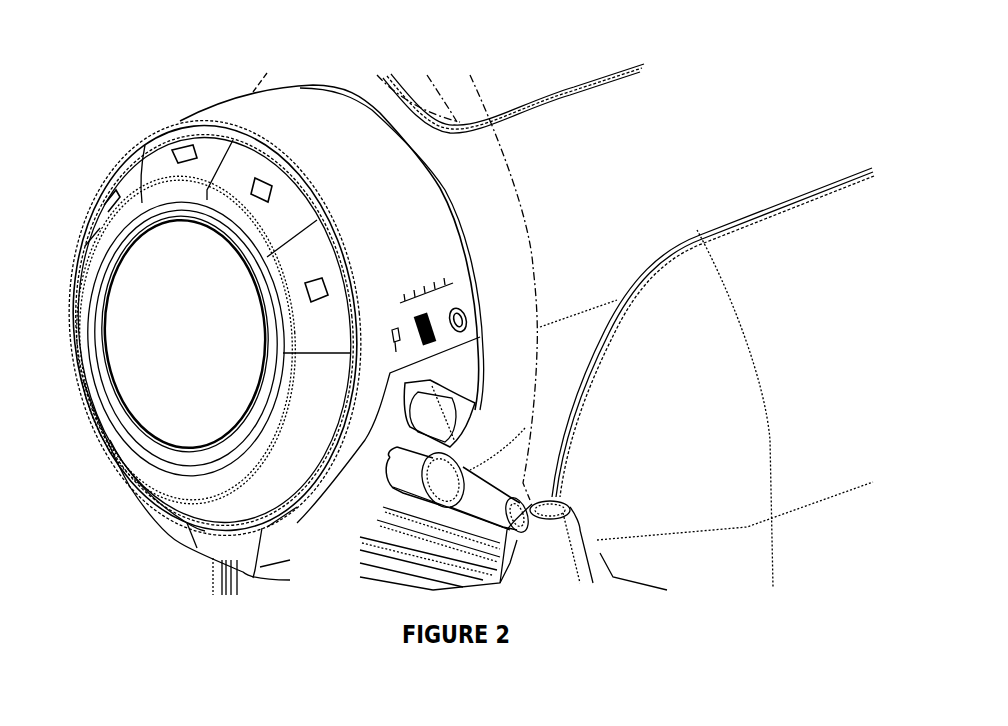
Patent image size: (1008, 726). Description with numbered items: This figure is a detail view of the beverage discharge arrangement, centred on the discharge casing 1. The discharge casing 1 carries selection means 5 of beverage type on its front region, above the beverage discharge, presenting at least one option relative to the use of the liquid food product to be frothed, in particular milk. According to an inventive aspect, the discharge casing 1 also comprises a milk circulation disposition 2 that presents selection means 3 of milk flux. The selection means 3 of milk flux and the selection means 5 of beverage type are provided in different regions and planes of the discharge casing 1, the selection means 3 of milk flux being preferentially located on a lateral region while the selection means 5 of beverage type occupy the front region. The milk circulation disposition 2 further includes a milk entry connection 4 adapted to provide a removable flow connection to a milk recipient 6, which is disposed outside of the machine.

The discharge casing 1 is at (413, 230).
The milk circulation disposition 2 is at (464, 369).
The selection means of milk flux 3 is at (490, 399).
The milk entry connection 4 is at (374, 482).
The selection means of beverage type 5 is at (141, 140).
The milk recipient 6 is at (628, 574).